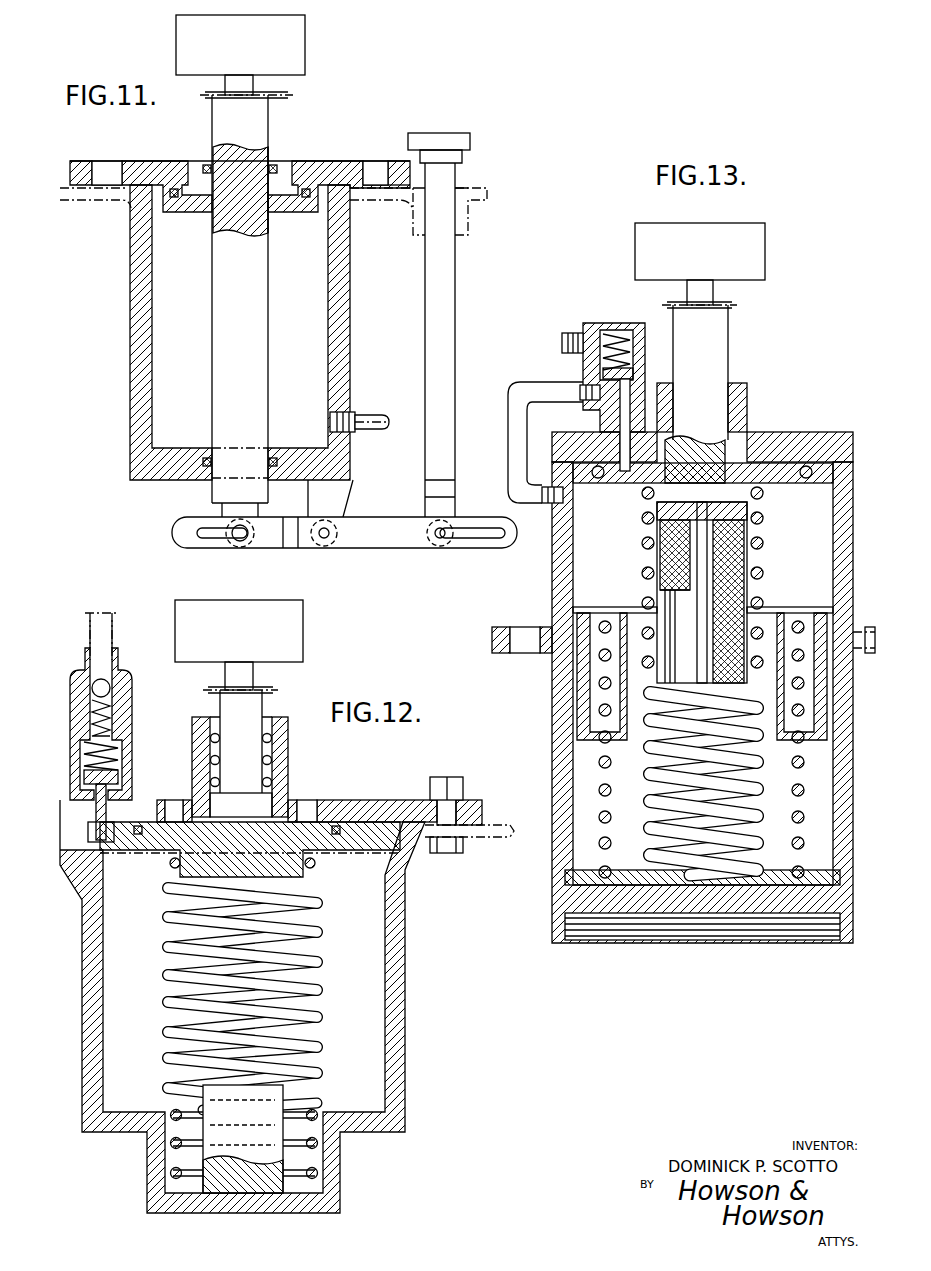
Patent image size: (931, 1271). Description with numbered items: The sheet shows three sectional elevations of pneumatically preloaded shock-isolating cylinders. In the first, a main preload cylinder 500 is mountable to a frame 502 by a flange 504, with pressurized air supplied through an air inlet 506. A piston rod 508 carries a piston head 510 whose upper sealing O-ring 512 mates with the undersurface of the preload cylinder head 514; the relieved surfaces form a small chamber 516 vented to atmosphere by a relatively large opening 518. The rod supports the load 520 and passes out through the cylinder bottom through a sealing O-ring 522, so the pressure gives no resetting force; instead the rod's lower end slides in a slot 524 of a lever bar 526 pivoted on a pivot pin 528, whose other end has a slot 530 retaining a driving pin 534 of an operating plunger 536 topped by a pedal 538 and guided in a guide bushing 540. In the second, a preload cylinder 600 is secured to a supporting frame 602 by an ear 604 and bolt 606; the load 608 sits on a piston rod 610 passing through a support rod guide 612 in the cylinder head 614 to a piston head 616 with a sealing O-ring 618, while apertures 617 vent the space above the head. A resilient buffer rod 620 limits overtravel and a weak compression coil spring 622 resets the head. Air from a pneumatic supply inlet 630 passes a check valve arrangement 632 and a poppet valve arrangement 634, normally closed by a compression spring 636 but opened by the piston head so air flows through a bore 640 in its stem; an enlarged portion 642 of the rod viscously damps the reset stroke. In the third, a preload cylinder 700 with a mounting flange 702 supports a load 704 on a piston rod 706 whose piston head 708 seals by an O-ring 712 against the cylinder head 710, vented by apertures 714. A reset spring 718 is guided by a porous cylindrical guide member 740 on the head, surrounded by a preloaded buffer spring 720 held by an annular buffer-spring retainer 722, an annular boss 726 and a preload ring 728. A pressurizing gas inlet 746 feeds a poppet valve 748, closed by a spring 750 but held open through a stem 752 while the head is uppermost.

In FIG. 11, the main preload cylinder 500 is at (217, 332).
In FIG. 11, the frame 502 is at (443, 192).
In FIG. 11, the flange 504 is at (393, 149).
In FIG. 11, the air inlet 506 is at (366, 401).
In FIG. 11, the piston rod 508 is at (264, 94).
In FIG. 11, the piston head 510 is at (265, 299).
In FIG. 11, the sealing O-ring 512 is at (236, 220).
In FIG. 11, the preload cylinder head 514 is at (240, 171).
In FIG. 11, the small chamber 516 is at (291, 209).
In FIG. 11, the opening 518 is at (217, 151).
In FIG. 11, the load 520 is at (263, 45).
In FIG. 11, the sealing O-ring 522 is at (258, 437).
In FIG. 11, the slot 524 is at (199, 549).
In FIG. 11, the lever bar 526 is at (344, 547).
In FIG. 11, the pivot pin 528 is at (321, 548).
In FIG. 11, the slot 530 is at (365, 548).
In FIG. 11, the driving pin 534 is at (431, 556).
In FIG. 11, the operating plunger 536 is at (463, 340).
In FIG. 11, the pedal 538 is at (452, 135).
In FIG. 11, the guide bushing 540 is at (465, 209).
In FIG. 12, the preload cylinder 600 is at (257, 1006).
In FIG. 12, the supporting frame 602 is at (469, 855).
In FIG. 12, the ear 604 is at (472, 781).
In FIG. 12, the bolt 606 is at (445, 865).
In FIG. 12, the load 608 is at (263, 631).
In FIG. 12, the piston rod 610 is at (220, 688).
In FIG. 12, the support rod guide 612 is at (262, 767).
In FIG. 12, the cylinder head 614 is at (319, 799).
In FIG. 12, the piston head 616 is at (250, 858).
In FIG. 12, the apertures 617 is at (235, 797).
In FIG. 12, the sealing O-ring 618 is at (269, 830).
In FIG. 12, the resilient buffer rod 620 is at (244, 1139).
In FIG. 12, the compression coil spring 622 is at (262, 999).
In FIG. 12, the pneumatic supply inlet 630 is at (121, 636).
In FIG. 12, the check valve arrangement 632 is at (130, 681).
In FIG. 12, the poppet valve arrangement 634 is at (131, 799).
In FIG. 12, the compression spring 636 is at (131, 735).
In FIG. 12, the bore 640 is at (104, 772).
In FIG. 12, the enlarged portion 642 is at (241, 753).
In FIG. 13, the preload cylinder 700 is at (680, 702).
In FIG. 13, the mounting flange 702 is at (675, 624).
In FIG. 13, the load 704 is at (723, 251).
In FIG. 13, the piston rod 706 is at (747, 304).
In FIG. 13, the piston head 708 is at (703, 485).
In FIG. 13, the cylinder head 710 is at (702, 437).
In FIG. 13, the O-ring 712 is at (702, 490).
In FIG. 13, the apertures 714 is at (734, 408).
In FIG. 13, the reset spring 718 is at (734, 592).
In FIG. 13, the buffer spring 720 is at (769, 784).
In FIG. 13, the buffer-spring retainer 722 is at (702, 729).
In FIG. 13, the annular boss 726 is at (726, 862).
In FIG. 13, the preload ring 728 is at (703, 590).
In FIG. 13, the cylindrical guide member 740 is at (673, 601).
In FIG. 13, the pressurizing gas inlet 746 is at (573, 322).
In FIG. 13, the poppet valve 748 is at (657, 410).
In FIG. 13, the spring 750 is at (614, 367).
In FIG. 13, the stem 752 is at (557, 442).